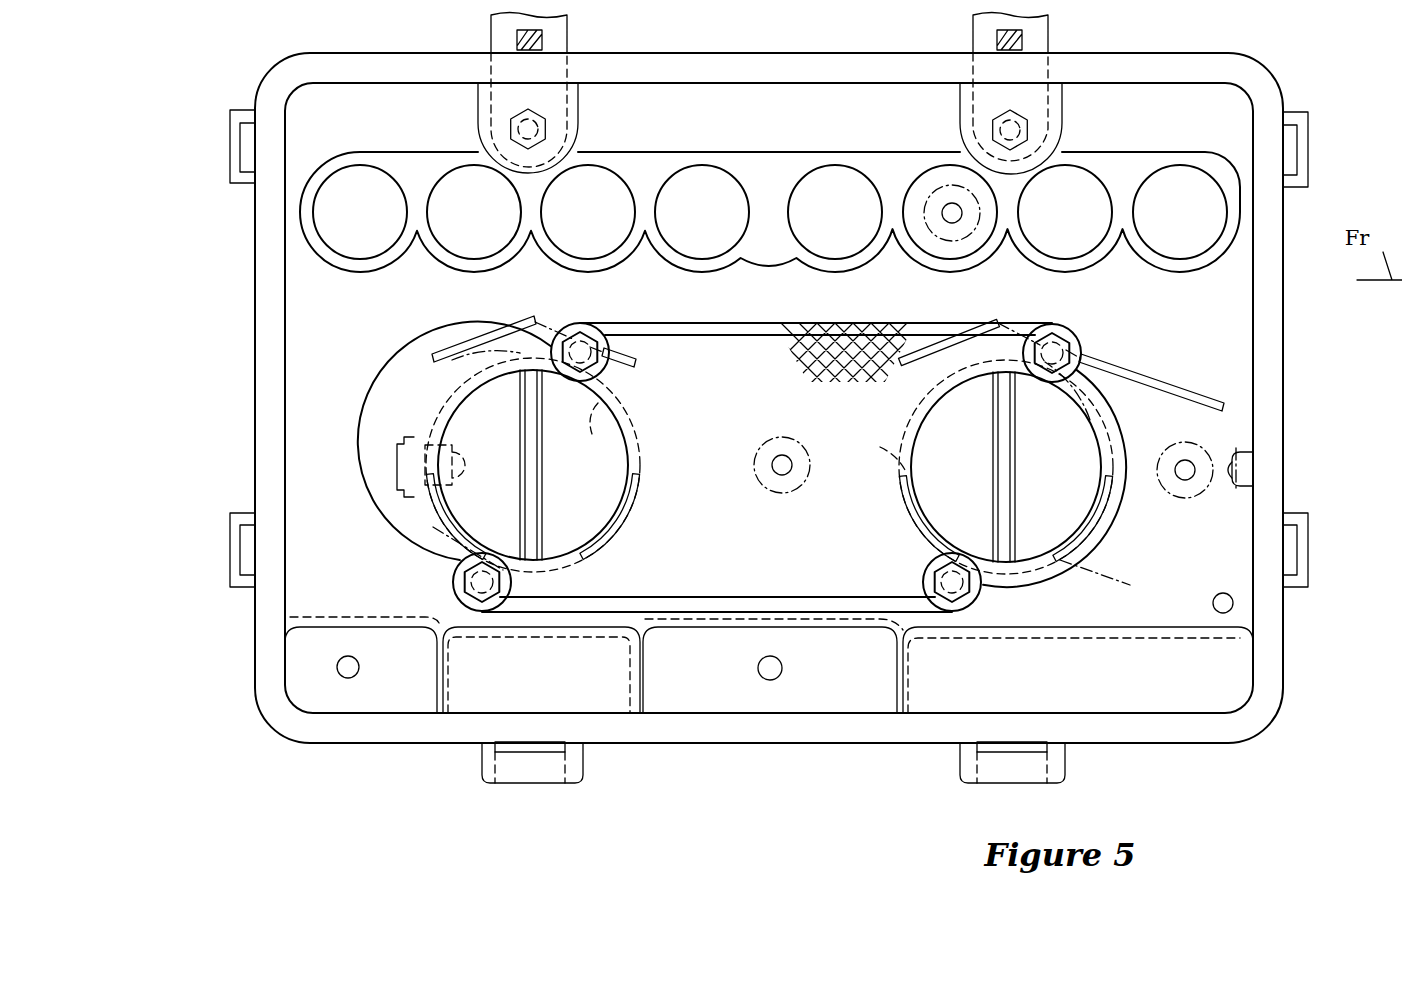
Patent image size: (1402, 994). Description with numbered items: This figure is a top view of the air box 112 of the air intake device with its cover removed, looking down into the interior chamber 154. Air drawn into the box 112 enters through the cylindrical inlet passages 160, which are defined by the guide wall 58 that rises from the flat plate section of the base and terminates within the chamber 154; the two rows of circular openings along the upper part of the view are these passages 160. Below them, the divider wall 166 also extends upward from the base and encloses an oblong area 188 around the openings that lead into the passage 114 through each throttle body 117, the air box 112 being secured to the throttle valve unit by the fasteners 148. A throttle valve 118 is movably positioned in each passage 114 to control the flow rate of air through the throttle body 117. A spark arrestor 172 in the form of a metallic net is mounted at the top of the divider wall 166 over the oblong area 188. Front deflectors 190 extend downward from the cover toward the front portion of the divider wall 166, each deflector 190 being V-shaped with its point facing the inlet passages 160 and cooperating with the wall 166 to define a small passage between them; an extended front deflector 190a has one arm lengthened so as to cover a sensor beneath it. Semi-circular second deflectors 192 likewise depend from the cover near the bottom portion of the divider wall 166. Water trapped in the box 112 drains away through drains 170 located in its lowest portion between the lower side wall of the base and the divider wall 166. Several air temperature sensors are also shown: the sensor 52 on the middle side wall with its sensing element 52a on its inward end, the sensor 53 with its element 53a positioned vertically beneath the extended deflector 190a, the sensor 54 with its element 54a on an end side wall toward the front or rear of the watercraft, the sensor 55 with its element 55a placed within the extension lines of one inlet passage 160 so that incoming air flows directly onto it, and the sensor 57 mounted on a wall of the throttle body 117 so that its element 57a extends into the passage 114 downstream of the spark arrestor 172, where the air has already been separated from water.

The air temperature sensor 52 is at (800, 488).
The air temperature element 52a is at (778, 480).
The air temperature sensor 53 is at (1190, 485).
The air temperature element 53a is at (1180, 475).
The air temperature sensor 54 is at (1240, 488).
The air temperature element 54a is at (1232, 452).
The air temperature sensor 55 is at (923, 203).
The air temperature element 55a is at (950, 205).
The air temperature sensor 57 is at (452, 447).
The air temperature element 57a is at (455, 482).
The guide wall 58 is at (437, 253).
The air box 112 is at (712, 757).
The passage 114 is at (598, 412).
The throttle body 117 is at (437, 420).
The throttle valve 118 is at (612, 452).
The fasteners 148 is at (597, 340).
The interior chamber 154 is at (315, 464).
The cylindrical inlet passages 160 is at (795, 198).
The divider wall 166 is at (682, 330).
The drains 170 is at (349, 678).
The spark arrestor 172 is at (825, 345).
The oblong area 188 is at (748, 377).
The front deflectors 190 is at (440, 340).
The extended front deflector 190a is at (1140, 352).
The second deflector 192 is at (610, 552).